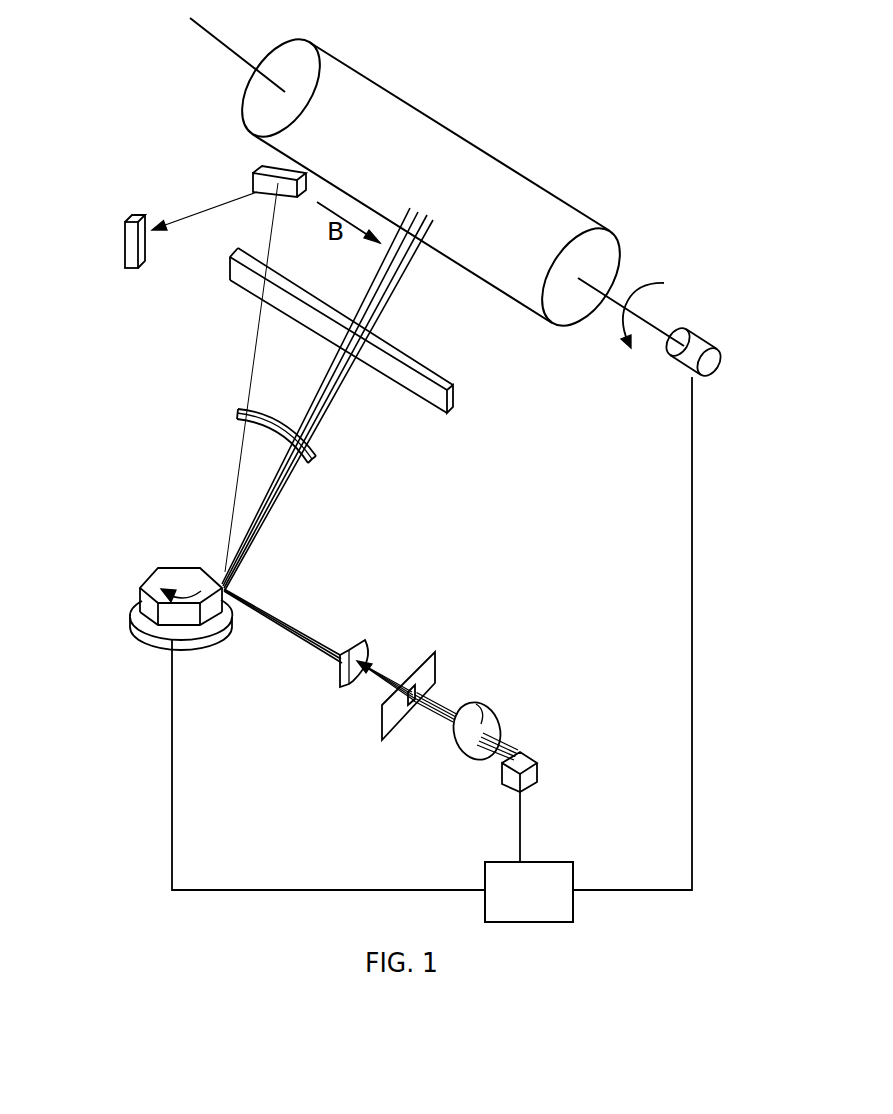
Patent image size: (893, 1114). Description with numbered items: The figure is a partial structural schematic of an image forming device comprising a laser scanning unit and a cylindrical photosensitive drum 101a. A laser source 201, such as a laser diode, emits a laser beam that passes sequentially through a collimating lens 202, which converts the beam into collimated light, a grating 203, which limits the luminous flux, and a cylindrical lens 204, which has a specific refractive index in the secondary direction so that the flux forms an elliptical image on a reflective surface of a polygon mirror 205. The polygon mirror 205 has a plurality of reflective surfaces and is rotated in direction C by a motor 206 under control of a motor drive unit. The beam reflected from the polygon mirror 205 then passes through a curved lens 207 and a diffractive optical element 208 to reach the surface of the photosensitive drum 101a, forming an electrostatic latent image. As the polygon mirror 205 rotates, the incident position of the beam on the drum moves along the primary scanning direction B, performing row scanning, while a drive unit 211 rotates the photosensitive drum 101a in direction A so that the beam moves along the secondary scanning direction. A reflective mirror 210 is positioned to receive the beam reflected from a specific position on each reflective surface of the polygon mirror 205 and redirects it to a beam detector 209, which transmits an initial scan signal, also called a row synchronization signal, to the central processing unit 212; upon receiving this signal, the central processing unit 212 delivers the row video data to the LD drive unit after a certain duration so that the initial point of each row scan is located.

The photosensitive drum 101a is at (452, 141).
The laser source 201 is at (520, 752).
The collimating lens 202 is at (480, 722).
The grating 203 is at (403, 672).
The cylindrical lens 204 is at (347, 644).
The polygon mirror 205 is at (143, 586).
The motor 206 is at (162, 644).
The curved lens 207 is at (313, 453).
The diffractive optical element 208 is at (450, 388).
The beam detector 209 is at (125, 254).
The reflective mirror 210 is at (252, 182).
The drive unit 211 is at (710, 345).
The central processing unit 212 is at (560, 862).